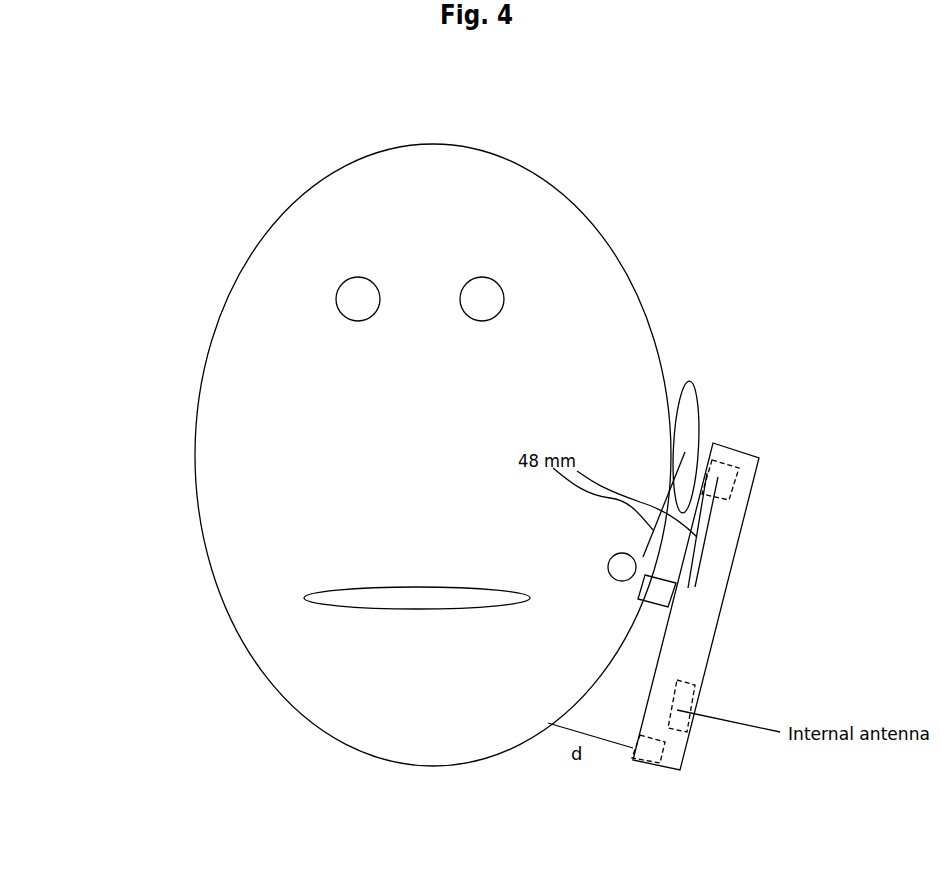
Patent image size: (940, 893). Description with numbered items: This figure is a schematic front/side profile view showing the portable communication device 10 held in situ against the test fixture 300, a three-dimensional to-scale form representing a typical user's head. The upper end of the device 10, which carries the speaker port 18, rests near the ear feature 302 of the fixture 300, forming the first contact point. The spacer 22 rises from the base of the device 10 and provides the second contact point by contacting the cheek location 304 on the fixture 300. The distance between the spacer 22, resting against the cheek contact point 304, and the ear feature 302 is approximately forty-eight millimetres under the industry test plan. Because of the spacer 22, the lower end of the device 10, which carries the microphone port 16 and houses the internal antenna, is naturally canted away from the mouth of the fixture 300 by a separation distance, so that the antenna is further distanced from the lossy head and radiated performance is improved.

The test fixture 300 is at (547, 198).
The ear feature 302 is at (692, 437).
The cheek contact point 304 is at (613, 592).
The portable communication device 10 is at (722, 517).
The speaker port 18 is at (718, 482).
The spacer 22 is at (660, 590).
The microphone port 16 is at (660, 756).